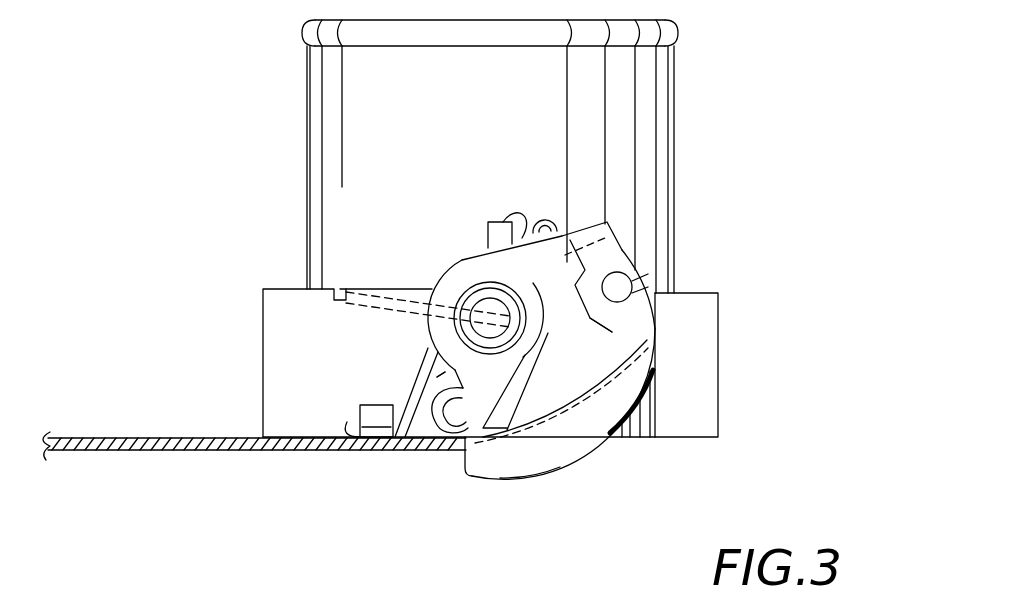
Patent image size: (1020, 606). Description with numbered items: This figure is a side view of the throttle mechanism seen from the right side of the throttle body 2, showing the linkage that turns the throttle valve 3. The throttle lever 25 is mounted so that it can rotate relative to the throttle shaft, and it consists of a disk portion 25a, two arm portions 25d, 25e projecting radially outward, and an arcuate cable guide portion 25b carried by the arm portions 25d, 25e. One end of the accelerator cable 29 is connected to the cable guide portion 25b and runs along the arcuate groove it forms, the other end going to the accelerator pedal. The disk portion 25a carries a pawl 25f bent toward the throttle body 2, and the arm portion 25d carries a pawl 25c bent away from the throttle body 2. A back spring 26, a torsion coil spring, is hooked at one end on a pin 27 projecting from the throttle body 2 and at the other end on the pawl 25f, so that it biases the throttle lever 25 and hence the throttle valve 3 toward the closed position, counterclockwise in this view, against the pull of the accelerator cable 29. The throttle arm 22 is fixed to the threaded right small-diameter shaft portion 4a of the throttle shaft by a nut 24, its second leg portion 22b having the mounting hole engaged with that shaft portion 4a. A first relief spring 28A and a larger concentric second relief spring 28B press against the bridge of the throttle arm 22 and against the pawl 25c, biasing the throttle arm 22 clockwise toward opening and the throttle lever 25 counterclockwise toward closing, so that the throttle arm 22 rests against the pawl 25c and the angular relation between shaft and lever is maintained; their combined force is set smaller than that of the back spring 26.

The throttle body 2 is at (663, 93).
The throttle valve 3 is at (342, 289).
The right small-diameter shaft portion 4a is at (488, 312).
The throttle arm 22 is at (503, 372).
The second leg portion 22b is at (568, 262).
The nut 24 is at (505, 321).
The throttle lever 25 is at (588, 463).
The disk portion 25a is at (453, 272).
The cable guide portion 25b is at (523, 463).
The pawl 25c is at (447, 417).
The arm portion 25d is at (488, 470).
The arm portion 25e is at (587, 318).
The pawl 25f is at (495, 222).
The back spring 26 is at (412, 372).
The pin 27 is at (373, 418).
The first relief spring 28A is at (437, 377).
The second relief spring 28B is at (437, 377).
The accelerator cable 29 is at (177, 450).